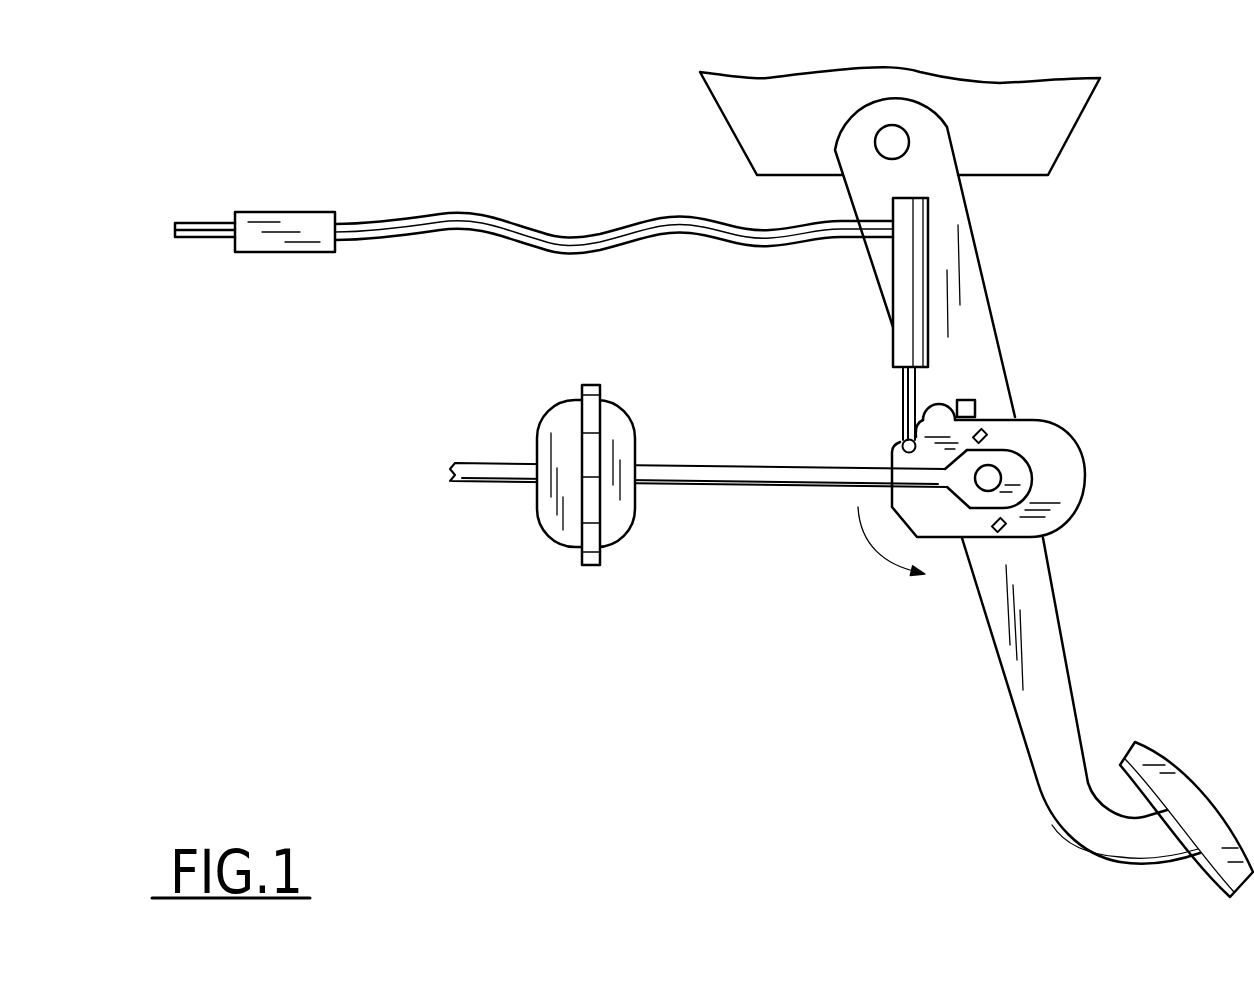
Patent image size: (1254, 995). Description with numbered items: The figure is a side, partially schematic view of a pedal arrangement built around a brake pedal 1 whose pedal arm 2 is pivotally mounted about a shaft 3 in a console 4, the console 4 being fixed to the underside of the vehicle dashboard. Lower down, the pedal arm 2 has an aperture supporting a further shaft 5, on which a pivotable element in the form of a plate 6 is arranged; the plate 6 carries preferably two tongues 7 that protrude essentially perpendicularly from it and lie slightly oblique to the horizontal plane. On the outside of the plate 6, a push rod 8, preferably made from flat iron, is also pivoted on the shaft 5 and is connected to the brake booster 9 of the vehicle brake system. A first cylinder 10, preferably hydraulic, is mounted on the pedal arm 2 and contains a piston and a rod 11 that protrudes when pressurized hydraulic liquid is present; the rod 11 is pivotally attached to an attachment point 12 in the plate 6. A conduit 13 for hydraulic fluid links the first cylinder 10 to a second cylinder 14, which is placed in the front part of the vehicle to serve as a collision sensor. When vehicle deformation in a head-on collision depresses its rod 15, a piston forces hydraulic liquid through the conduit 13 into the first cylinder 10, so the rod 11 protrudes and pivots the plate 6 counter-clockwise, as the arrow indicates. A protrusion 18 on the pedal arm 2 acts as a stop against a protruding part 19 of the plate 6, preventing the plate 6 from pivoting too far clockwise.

The brake pedal 1 is at (1050, 865).
The pedal arm 2 is at (1043, 725).
The shaft 3 is at (898, 137).
The console 4 is at (1040, 145).
The further shaft 5 is at (990, 478).
The plate 6 is at (1068, 497).
The tongues 7 is at (990, 437).
The push rod 8 is at (848, 490).
The brake booster 9 is at (621, 502).
The first cylinder 10 is at (903, 270).
The rod 11 is at (907, 392).
The attachment point 12 is at (897, 437).
The conduit 13 is at (478, 213).
The second cylinder 14 is at (298, 222).
The rod 15 is at (190, 222).
The protrusion 18 is at (967, 400).
The protruding part 19 is at (940, 408).